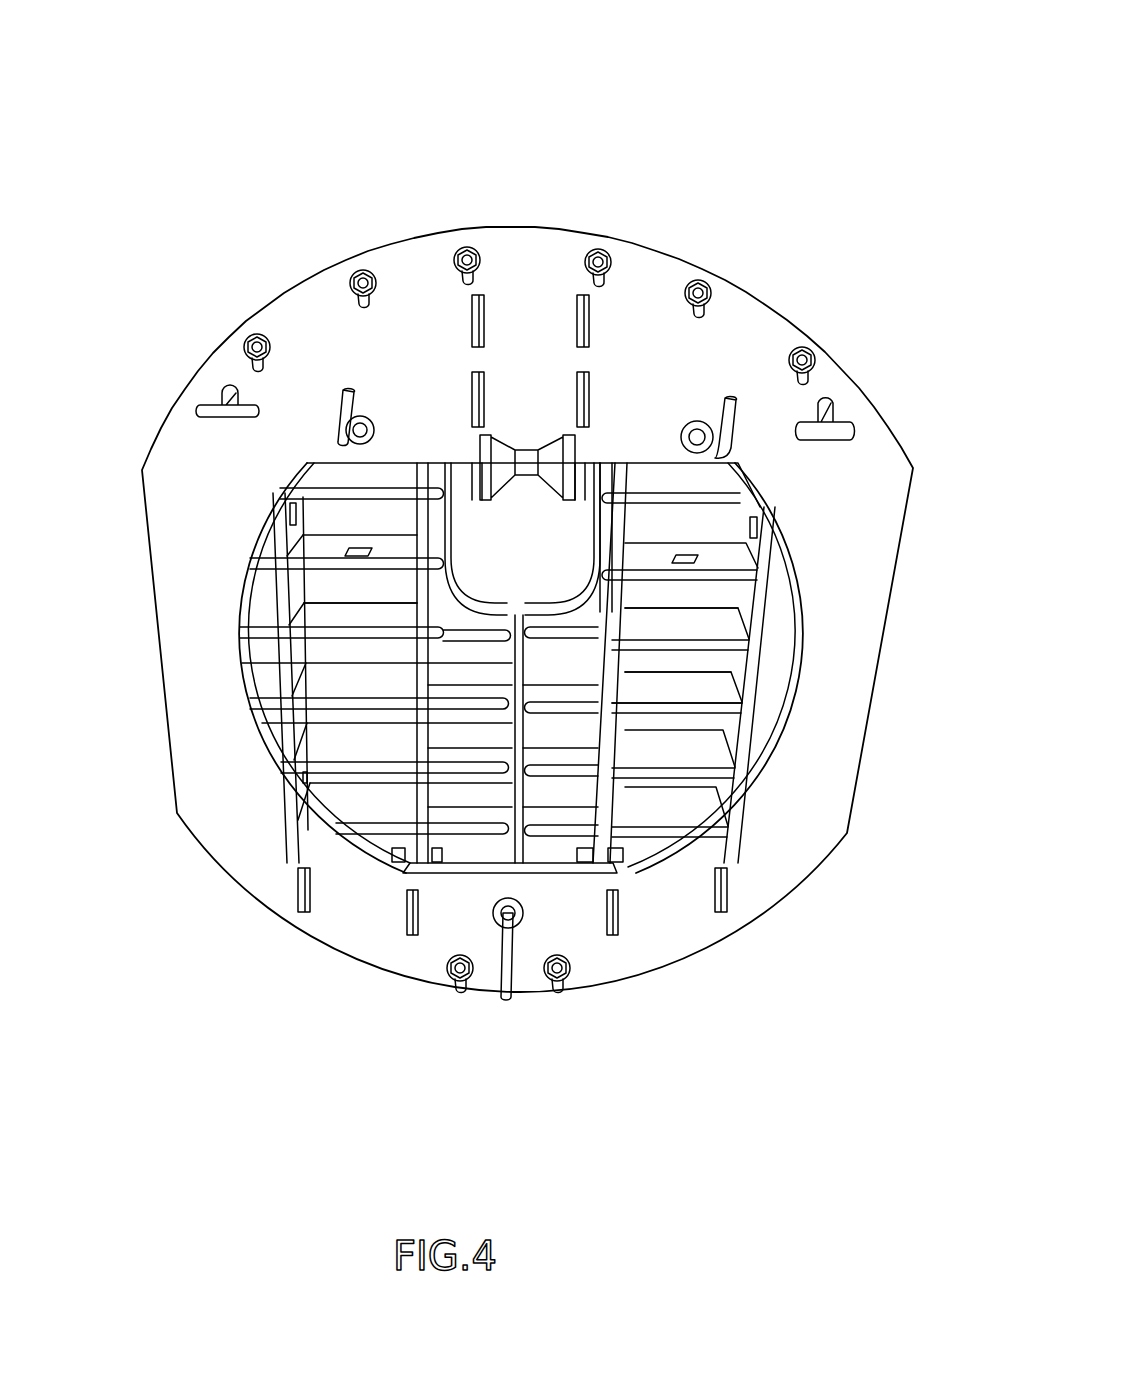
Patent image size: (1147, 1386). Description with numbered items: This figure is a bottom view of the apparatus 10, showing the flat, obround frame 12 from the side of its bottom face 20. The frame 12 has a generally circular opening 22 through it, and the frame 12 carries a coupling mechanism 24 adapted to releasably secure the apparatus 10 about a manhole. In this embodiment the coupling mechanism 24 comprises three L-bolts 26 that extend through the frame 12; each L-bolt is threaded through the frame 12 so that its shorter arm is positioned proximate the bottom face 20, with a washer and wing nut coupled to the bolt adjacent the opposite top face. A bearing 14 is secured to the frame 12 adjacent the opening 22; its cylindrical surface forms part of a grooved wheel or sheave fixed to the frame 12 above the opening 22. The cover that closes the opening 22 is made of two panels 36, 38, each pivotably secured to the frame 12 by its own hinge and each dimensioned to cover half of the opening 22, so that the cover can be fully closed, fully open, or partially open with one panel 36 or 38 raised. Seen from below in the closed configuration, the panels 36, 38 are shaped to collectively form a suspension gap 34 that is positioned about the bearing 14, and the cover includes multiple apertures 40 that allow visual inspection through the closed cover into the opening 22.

The apparatus 10 is at (246, 190).
The frame 12 is at (258, 830).
The bearing 14 is at (525, 477).
The bottom face 20 is at (256, 806).
The opening 22 is at (549, 852).
The coupling mechanism 24 is at (737, 427).
The L-bolts 26 is at (688, 425).
The suspension gap 34 is at (556, 547).
The panel 36 is at (660, 692).
The other panel 38 is at (337, 612).
The apertures 40 is at (686, 600).